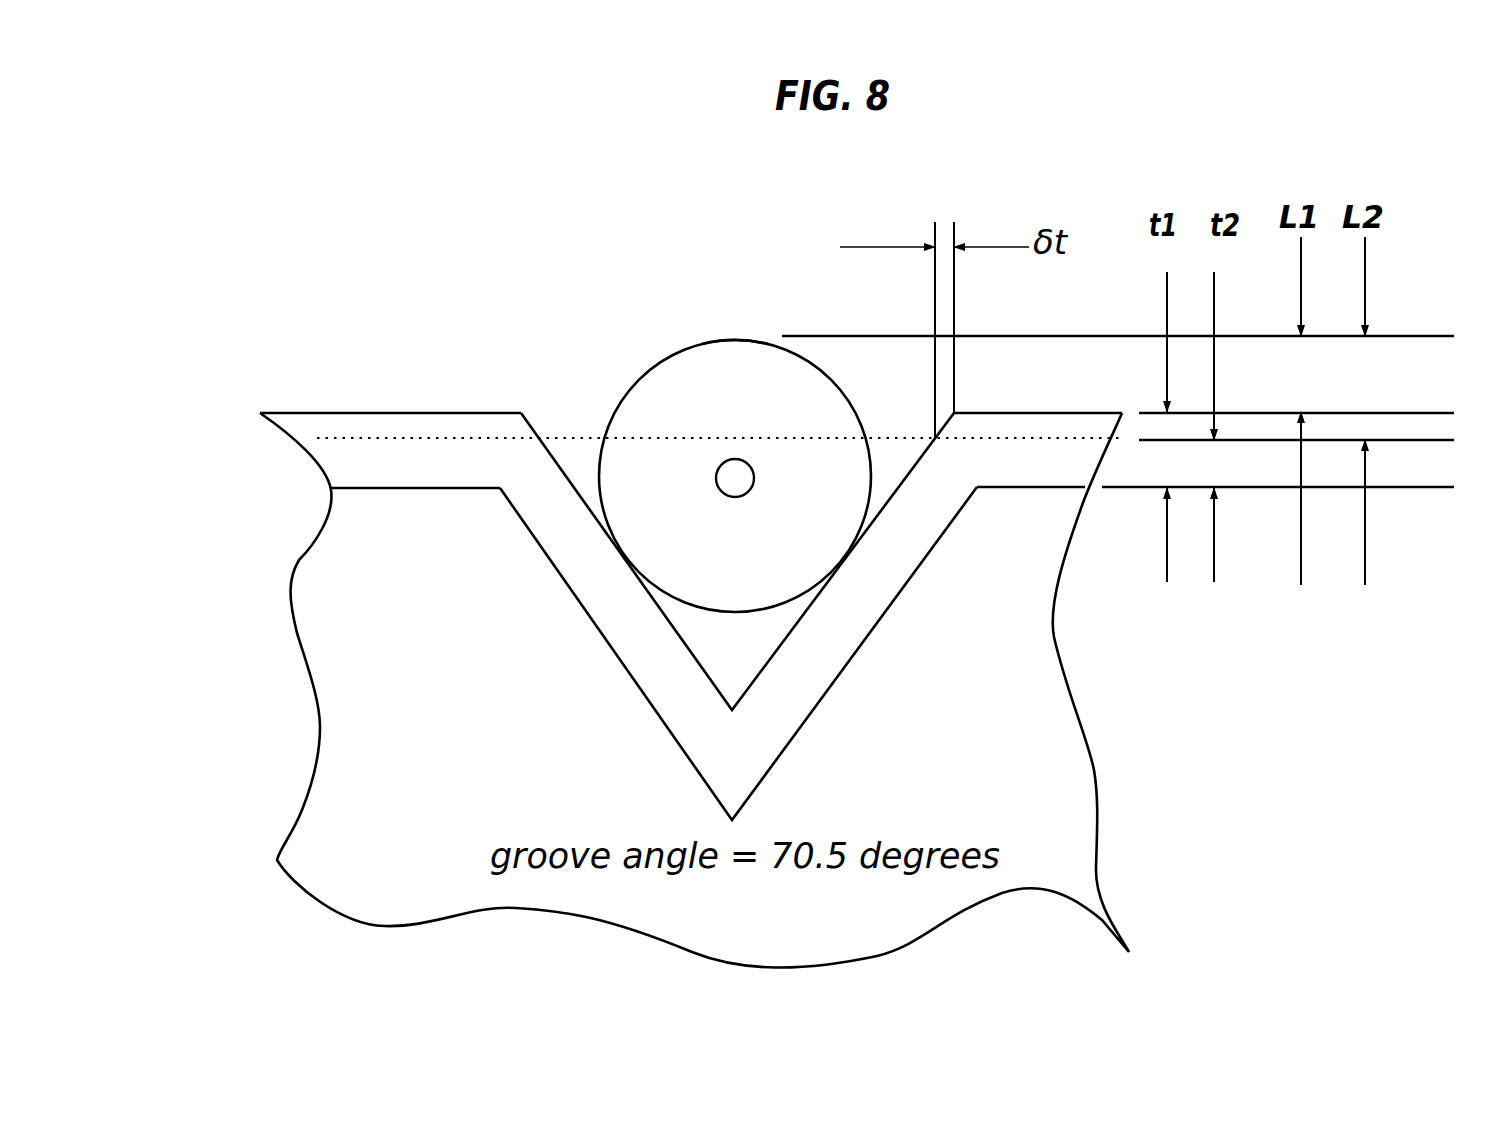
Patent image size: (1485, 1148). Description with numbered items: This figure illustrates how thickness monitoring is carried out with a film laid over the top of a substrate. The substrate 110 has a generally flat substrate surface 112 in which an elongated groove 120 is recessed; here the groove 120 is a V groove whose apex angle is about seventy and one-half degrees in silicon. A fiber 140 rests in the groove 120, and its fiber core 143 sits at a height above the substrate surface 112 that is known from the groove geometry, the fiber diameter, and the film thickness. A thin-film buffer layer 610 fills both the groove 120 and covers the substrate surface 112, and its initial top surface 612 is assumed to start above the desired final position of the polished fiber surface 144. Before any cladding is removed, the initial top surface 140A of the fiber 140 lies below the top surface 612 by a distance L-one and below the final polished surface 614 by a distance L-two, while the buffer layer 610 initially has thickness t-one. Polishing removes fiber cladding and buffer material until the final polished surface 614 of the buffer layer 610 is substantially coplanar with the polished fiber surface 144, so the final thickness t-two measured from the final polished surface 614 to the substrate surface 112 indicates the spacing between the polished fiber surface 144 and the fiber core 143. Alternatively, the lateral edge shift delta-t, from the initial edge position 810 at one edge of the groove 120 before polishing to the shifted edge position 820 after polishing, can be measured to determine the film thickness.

The substrate 110 is at (510, 786).
The substrate surface 112 is at (462, 488).
The groove 120 is at (726, 648).
The fiber 140 is at (775, 561).
The initial top surface of the fiber 140A is at (733, 340).
The fiber core 143 is at (733, 478).
The polished fiber surface 144 is at (907, 437).
The buffer layer 610 is at (438, 467).
The top surface of the buffer layer 612 is at (1052, 407).
The final polished surface 614 is at (1262, 408).
The initial edge position 810 is at (952, 413).
The shifted edge position 820 is at (933, 438).